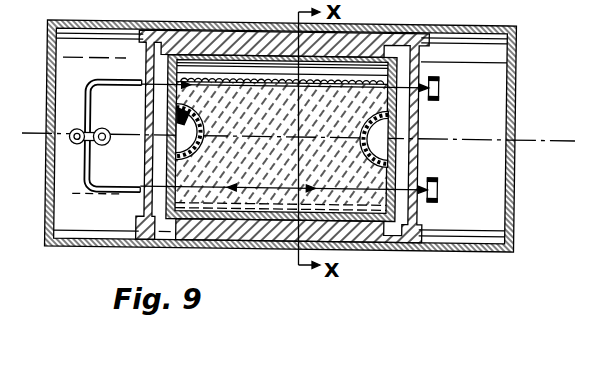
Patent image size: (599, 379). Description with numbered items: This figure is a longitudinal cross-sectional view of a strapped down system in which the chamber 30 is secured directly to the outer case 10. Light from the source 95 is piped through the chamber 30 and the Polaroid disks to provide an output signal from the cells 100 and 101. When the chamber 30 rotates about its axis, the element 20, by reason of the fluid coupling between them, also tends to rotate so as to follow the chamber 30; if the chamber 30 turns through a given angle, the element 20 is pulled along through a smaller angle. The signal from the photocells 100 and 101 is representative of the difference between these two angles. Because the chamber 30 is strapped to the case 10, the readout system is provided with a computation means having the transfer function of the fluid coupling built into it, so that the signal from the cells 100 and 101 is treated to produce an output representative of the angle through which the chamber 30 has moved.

The outer case 10 is at (506, 224).
The element 20 is at (279, 134).
The chamber 30 is at (392, 250).
The source 95 is at (100, 147).
The cell 100 is at (439, 86).
The cell 101 is at (439, 190).